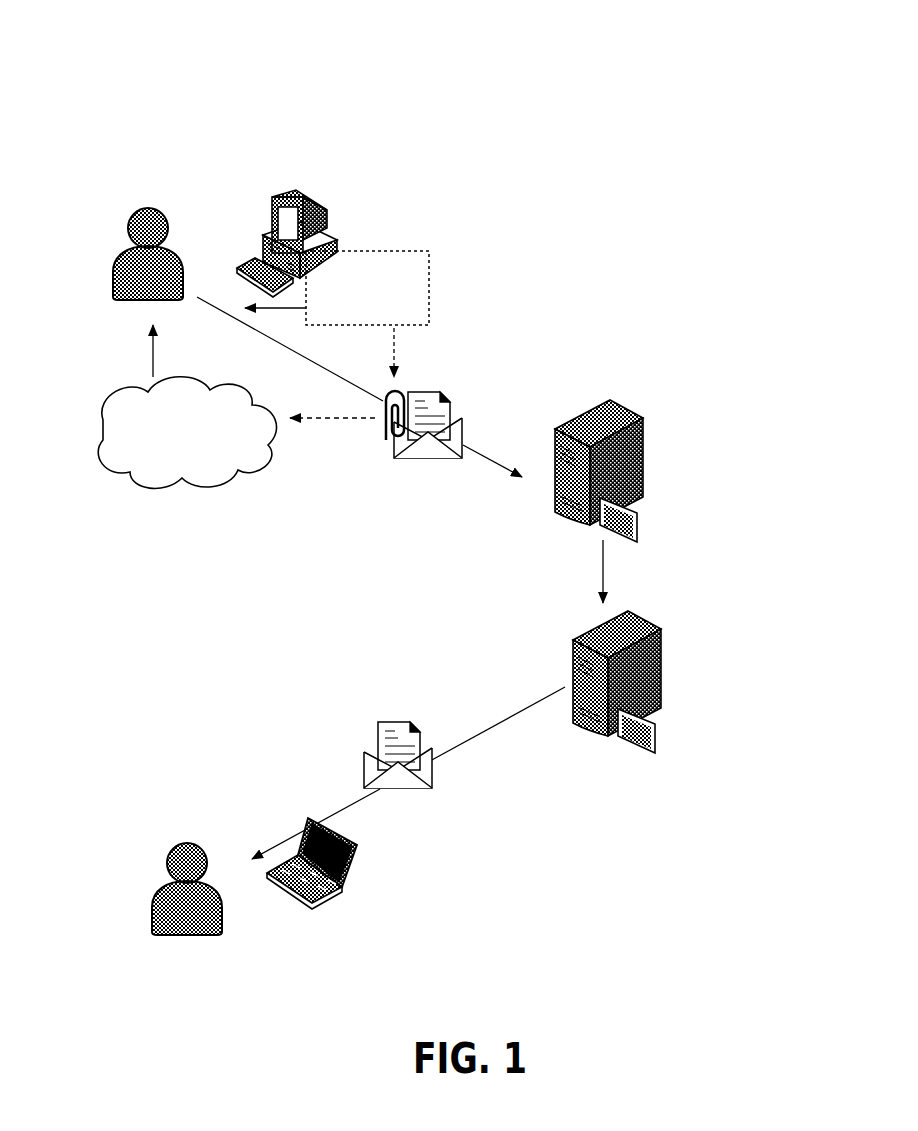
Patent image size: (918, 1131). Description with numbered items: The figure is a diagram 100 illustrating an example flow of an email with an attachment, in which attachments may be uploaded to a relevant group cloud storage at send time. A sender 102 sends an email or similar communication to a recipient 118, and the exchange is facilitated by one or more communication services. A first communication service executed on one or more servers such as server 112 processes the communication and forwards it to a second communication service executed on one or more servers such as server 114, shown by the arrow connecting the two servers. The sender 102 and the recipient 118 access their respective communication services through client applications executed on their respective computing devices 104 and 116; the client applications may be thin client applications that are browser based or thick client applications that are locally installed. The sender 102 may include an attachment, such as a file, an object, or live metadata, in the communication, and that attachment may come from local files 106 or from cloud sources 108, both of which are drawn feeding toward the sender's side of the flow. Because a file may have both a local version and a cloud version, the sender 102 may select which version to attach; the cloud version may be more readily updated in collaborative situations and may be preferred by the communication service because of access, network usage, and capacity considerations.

The diagram 100 is at (727, 48).
The sender 102 is at (146, 193).
The computing device 104 is at (292, 173).
The local files 106 is at (402, 238).
The cloud sources 108 is at (142, 373).
The server 112 is at (652, 435).
The server 114 is at (670, 643).
The computing device 116 is at (297, 810).
The recipient 118 is at (159, 843).